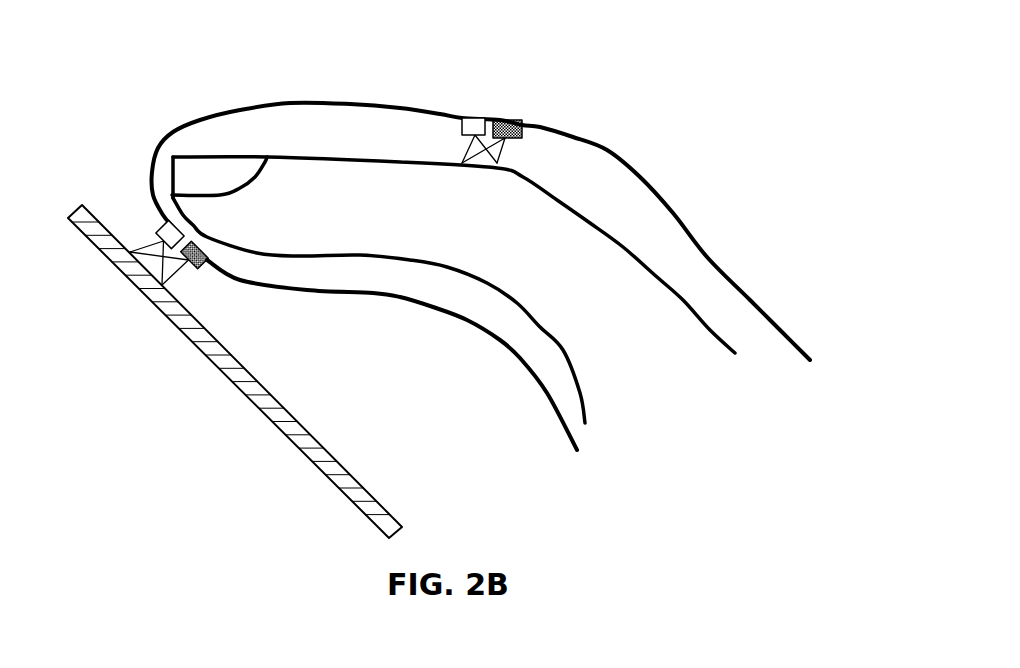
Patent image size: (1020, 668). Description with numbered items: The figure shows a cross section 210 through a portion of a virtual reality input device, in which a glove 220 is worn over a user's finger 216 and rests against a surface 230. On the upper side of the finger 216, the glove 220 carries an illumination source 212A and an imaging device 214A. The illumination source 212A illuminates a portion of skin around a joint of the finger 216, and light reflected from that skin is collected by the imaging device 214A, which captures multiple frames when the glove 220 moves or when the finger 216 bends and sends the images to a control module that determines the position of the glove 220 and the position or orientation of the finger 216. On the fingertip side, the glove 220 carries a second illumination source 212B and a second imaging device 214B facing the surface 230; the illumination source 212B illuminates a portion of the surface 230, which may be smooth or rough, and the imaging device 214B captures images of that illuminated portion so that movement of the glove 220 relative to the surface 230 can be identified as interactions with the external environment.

The system 210 is at (89, 61).
The illumination source 212A is at (474, 129).
The illumination source 212B is at (159, 228).
The imaging device 214A is at (521, 127).
The imaging device 214B is at (209, 269).
The finger 216 is at (633, 247).
The glove 220 is at (612, 155).
The surface 230 is at (228, 381).